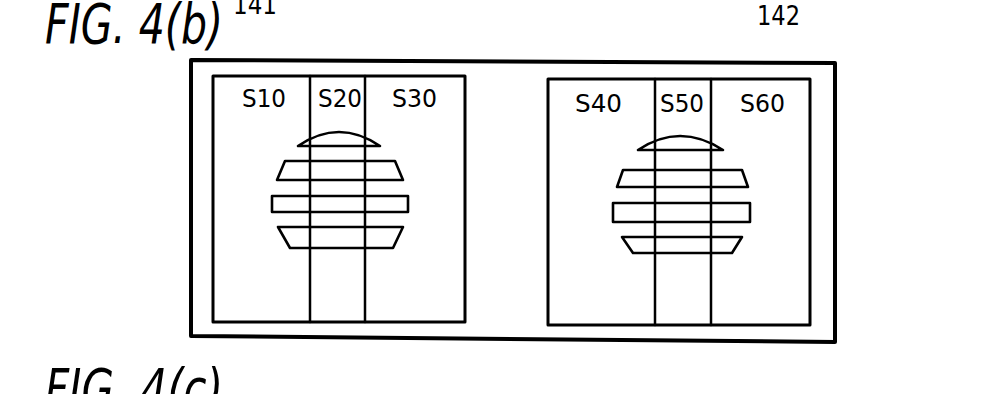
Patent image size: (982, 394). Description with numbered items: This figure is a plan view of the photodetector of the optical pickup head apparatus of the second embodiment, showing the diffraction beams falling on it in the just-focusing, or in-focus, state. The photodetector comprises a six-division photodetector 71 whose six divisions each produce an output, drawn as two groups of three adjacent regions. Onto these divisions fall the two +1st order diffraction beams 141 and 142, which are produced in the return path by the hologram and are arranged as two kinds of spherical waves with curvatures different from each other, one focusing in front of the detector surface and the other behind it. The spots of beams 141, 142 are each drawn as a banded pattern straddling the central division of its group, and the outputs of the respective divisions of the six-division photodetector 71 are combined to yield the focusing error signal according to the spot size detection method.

The 6-division photodetector 71 is at (835, 218).
The +1st order diffraction beam 141 is at (308, 248).
The +1st order diffraction beam 142 is at (713, 253).